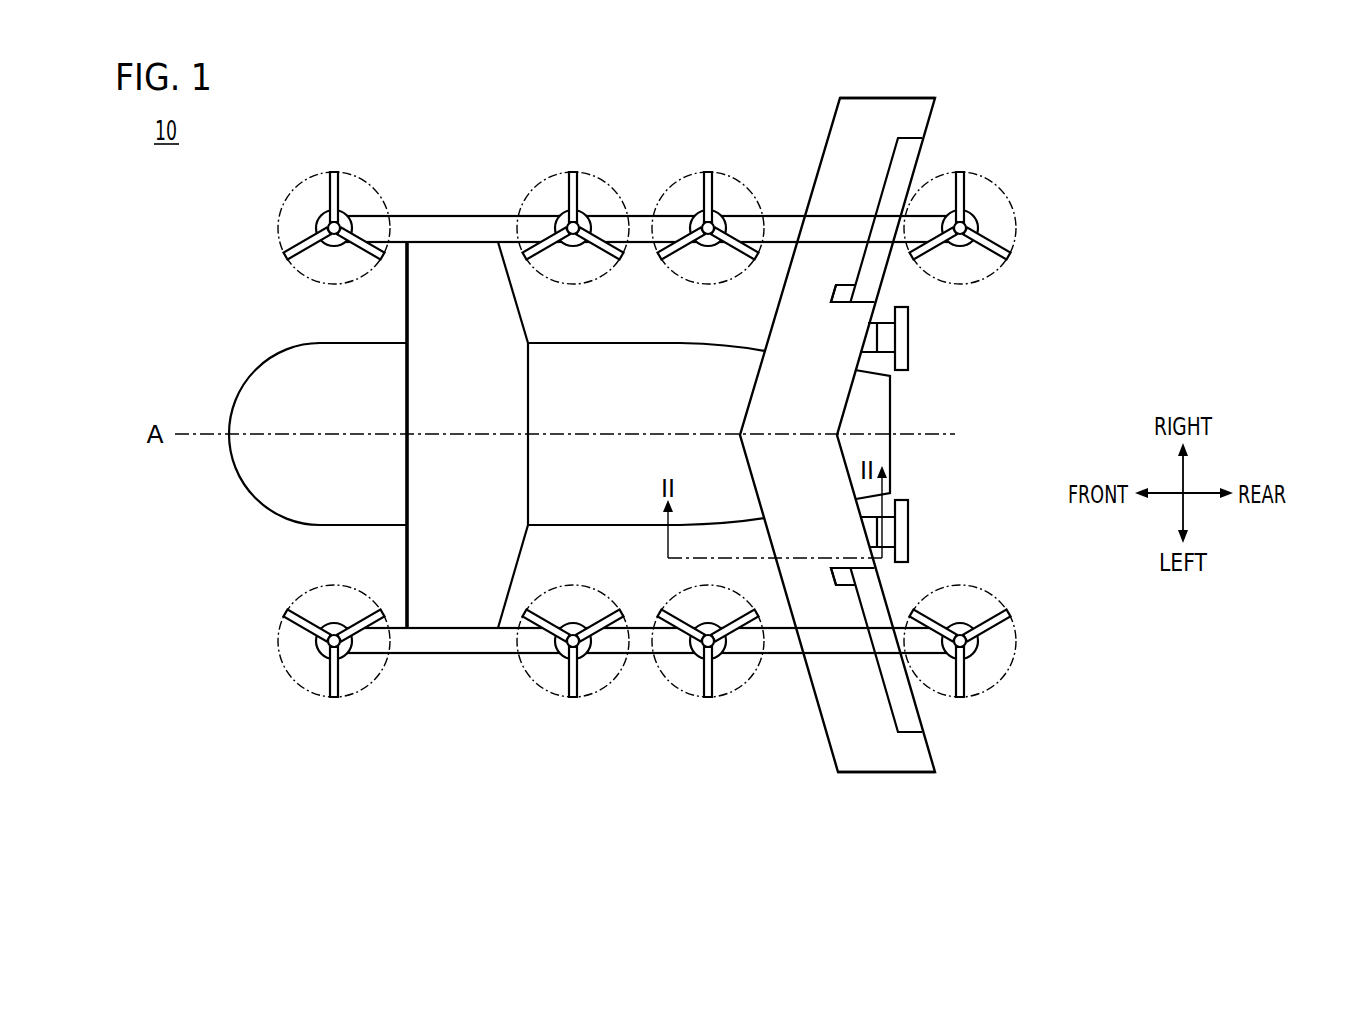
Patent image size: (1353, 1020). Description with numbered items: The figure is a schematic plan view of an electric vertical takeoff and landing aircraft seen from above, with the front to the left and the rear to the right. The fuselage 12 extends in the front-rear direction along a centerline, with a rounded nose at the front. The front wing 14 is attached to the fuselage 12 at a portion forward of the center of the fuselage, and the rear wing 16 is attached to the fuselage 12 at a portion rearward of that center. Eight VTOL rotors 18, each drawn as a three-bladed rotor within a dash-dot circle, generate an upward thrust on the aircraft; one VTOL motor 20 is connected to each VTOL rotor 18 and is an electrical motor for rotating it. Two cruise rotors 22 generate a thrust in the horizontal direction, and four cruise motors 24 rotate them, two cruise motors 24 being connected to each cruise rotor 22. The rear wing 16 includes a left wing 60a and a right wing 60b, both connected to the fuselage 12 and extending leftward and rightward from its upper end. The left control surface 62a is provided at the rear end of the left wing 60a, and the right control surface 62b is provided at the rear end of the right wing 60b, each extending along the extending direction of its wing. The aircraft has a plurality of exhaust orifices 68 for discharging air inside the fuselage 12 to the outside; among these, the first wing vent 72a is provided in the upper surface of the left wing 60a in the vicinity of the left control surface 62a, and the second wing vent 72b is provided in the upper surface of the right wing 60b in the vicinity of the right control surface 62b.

The fuselage 12 is at (260, 472).
The front wing 14 is at (423, 403).
The rear wing 16 is at (820, 104).
The VTOL rotor 18 is at (341, 192).
The VTOL motor 20 is at (321, 214).
The cruise rotor 22 is at (906, 329).
The cruise motor 24 is at (872, 342).
The left wing 60a is at (882, 762).
The right wing 60b is at (881, 104).
The left control surface 62a is at (888, 681).
The right control surface 62b is at (888, 188).
The exhaust orifice 68 is at (843, 435).
The first wing vent 72a is at (834, 576).
The second wing vent 72b is at (837, 304).